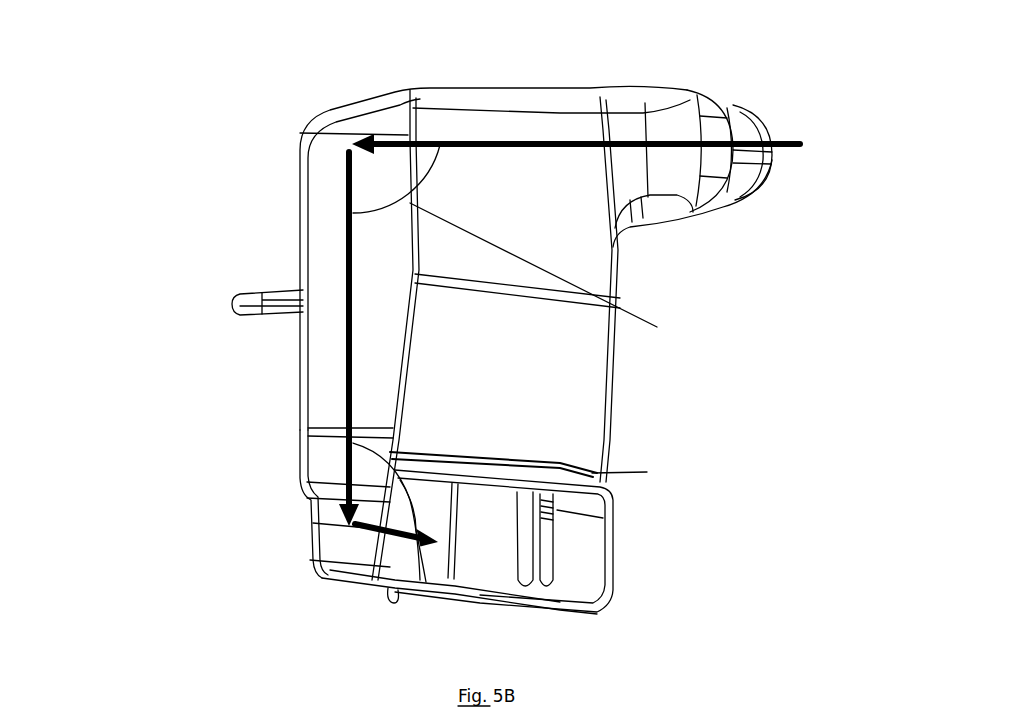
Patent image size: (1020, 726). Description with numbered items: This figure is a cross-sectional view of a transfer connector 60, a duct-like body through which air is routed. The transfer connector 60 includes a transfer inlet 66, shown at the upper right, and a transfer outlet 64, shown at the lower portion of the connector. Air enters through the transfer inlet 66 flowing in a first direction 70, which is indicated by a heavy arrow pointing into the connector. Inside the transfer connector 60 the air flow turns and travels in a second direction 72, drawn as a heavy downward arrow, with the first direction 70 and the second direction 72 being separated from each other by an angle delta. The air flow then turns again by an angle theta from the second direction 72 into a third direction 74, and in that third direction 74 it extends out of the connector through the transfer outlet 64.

The transfer connector 60 is at (138, 122).
The transfer outlet 64 is at (626, 521).
The transfer inlet 66 is at (787, 121).
The first direction 70 is at (647, 138).
The second direction 72 is at (347, 257).
The third direction 74 is at (455, 485).